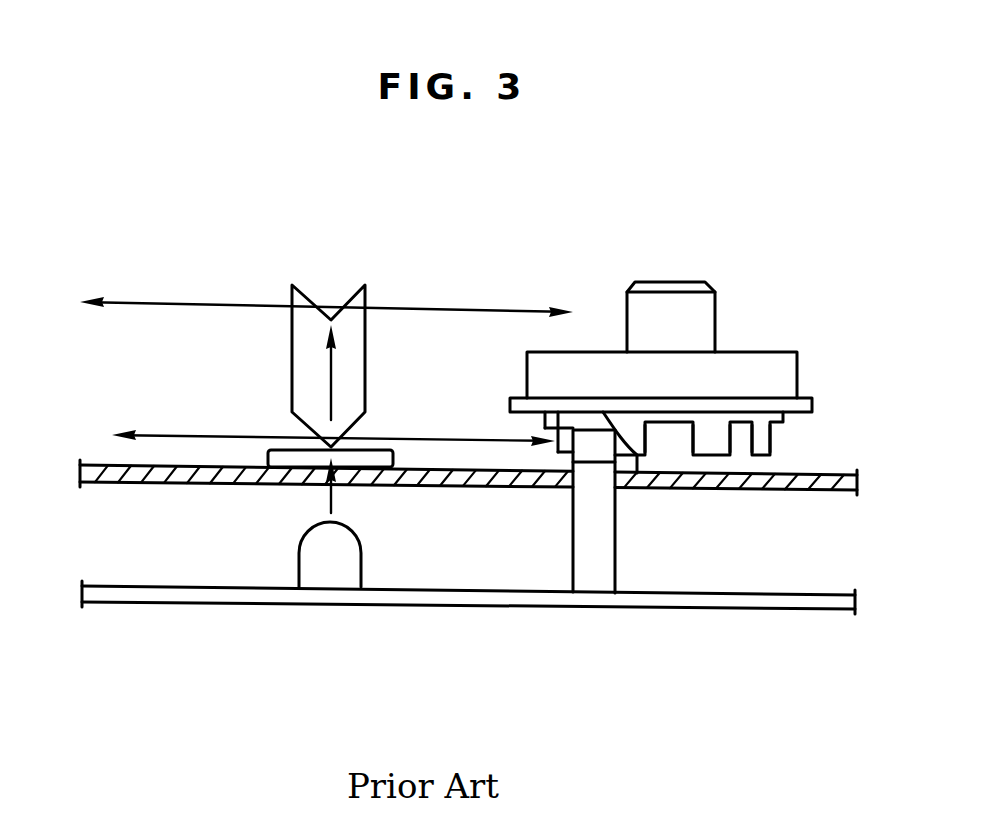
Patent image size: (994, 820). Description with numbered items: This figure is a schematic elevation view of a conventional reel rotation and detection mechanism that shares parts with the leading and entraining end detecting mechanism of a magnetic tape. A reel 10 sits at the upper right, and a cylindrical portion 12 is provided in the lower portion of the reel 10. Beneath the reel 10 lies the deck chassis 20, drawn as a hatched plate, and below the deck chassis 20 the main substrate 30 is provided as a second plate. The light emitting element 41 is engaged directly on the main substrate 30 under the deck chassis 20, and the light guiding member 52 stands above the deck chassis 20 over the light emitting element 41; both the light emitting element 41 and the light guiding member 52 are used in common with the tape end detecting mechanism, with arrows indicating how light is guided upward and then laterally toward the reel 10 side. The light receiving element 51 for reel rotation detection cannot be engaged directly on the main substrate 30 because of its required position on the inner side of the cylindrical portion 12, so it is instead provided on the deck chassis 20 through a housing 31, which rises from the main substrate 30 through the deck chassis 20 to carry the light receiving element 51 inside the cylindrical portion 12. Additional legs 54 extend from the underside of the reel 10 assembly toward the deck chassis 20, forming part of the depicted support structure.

The reel 10 is at (752, 365).
The cylindrical portion 12 is at (762, 450).
The deck chassis 20 is at (827, 475).
The main substrate 30 is at (780, 607).
The housing 31 is at (570, 542).
The light emitting element 41 is at (363, 555).
The light receiving element 51 is at (597, 440).
The light guiding member 52 is at (367, 355).
The connector legs 54 is at (662, 442).